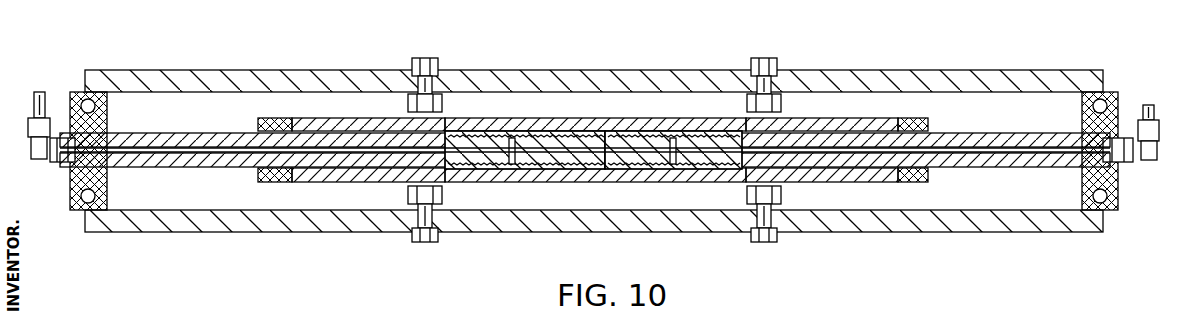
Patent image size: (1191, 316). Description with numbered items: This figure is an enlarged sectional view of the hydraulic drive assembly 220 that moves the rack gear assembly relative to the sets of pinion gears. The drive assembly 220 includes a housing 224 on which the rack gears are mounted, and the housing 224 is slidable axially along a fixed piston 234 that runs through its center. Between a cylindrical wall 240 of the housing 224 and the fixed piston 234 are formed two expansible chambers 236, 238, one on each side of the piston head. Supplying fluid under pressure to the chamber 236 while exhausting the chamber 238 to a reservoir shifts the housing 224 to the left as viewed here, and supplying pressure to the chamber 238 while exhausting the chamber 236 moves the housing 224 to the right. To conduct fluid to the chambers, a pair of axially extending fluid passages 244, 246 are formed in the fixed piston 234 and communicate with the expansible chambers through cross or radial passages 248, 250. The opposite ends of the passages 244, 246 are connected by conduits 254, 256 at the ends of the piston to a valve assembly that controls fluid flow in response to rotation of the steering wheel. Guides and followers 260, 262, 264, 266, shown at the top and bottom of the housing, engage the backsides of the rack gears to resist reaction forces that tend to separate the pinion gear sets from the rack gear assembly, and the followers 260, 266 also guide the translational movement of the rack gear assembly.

The hydraulic drive assembly 220 is at (647, 20).
The housing 224 is at (914, 122).
The fixed piston 234 is at (690, 124).
The expansible chamber 236 is at (394, 124).
The expansible chamber 238 is at (792, 128).
The cylindrical wall 240 is at (314, 124).
The axially extending fluid passage 244 is at (196, 124).
The axially extending fluid passage 246 is at (1036, 136).
The cross or radial passage 248 is at (448, 170).
The cross or radial passage 250 is at (738, 170).
The conduit 254 is at (47, 100).
The conduit 256 is at (1147, 105).
The guide and follower 260 is at (449, 108).
The guide and follower 262 is at (416, 206).
The guide and follower 264 is at (784, 96).
The guide and follower 266 is at (784, 208).